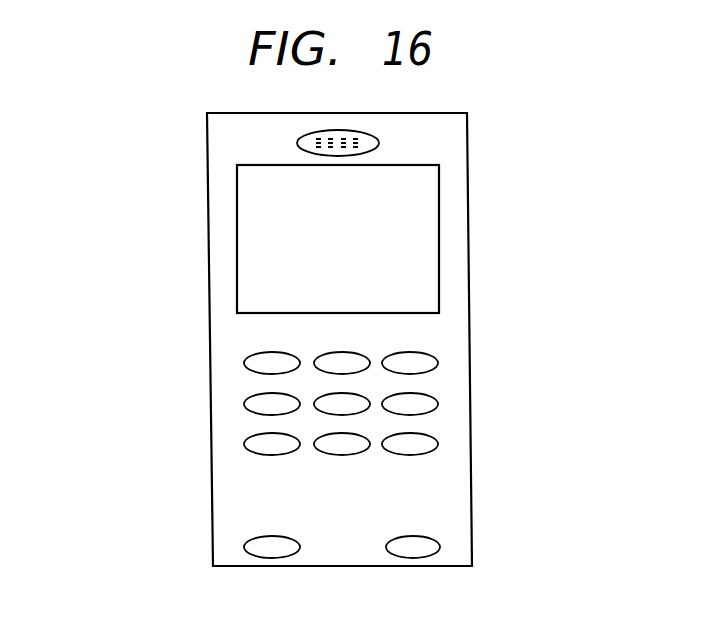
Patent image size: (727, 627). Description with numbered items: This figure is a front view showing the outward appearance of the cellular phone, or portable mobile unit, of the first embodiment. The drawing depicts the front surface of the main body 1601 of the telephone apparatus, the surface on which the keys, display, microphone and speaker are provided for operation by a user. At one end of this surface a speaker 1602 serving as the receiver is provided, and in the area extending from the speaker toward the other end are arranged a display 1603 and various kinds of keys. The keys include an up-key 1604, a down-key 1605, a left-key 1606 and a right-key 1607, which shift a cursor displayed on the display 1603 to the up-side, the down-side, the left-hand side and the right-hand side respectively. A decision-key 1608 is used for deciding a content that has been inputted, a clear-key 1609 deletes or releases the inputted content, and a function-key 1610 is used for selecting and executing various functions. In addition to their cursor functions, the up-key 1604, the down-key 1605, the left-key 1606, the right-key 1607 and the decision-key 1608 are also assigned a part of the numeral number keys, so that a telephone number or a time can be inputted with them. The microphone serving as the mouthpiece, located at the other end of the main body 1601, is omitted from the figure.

The main body 1601 is at (207, 148).
The speaker 1602 is at (380, 143).
The display 1603 is at (439, 229).
The up-key 1604 is at (353, 352).
The down-key 1605 is at (357, 453).
The left-key 1606 is at (244, 404).
The right-key 1607 is at (438, 404).
The decision-key 1608 is at (320, 396).
The clear-key 1609 is at (440, 547).
The function-key 1610 is at (244, 547).